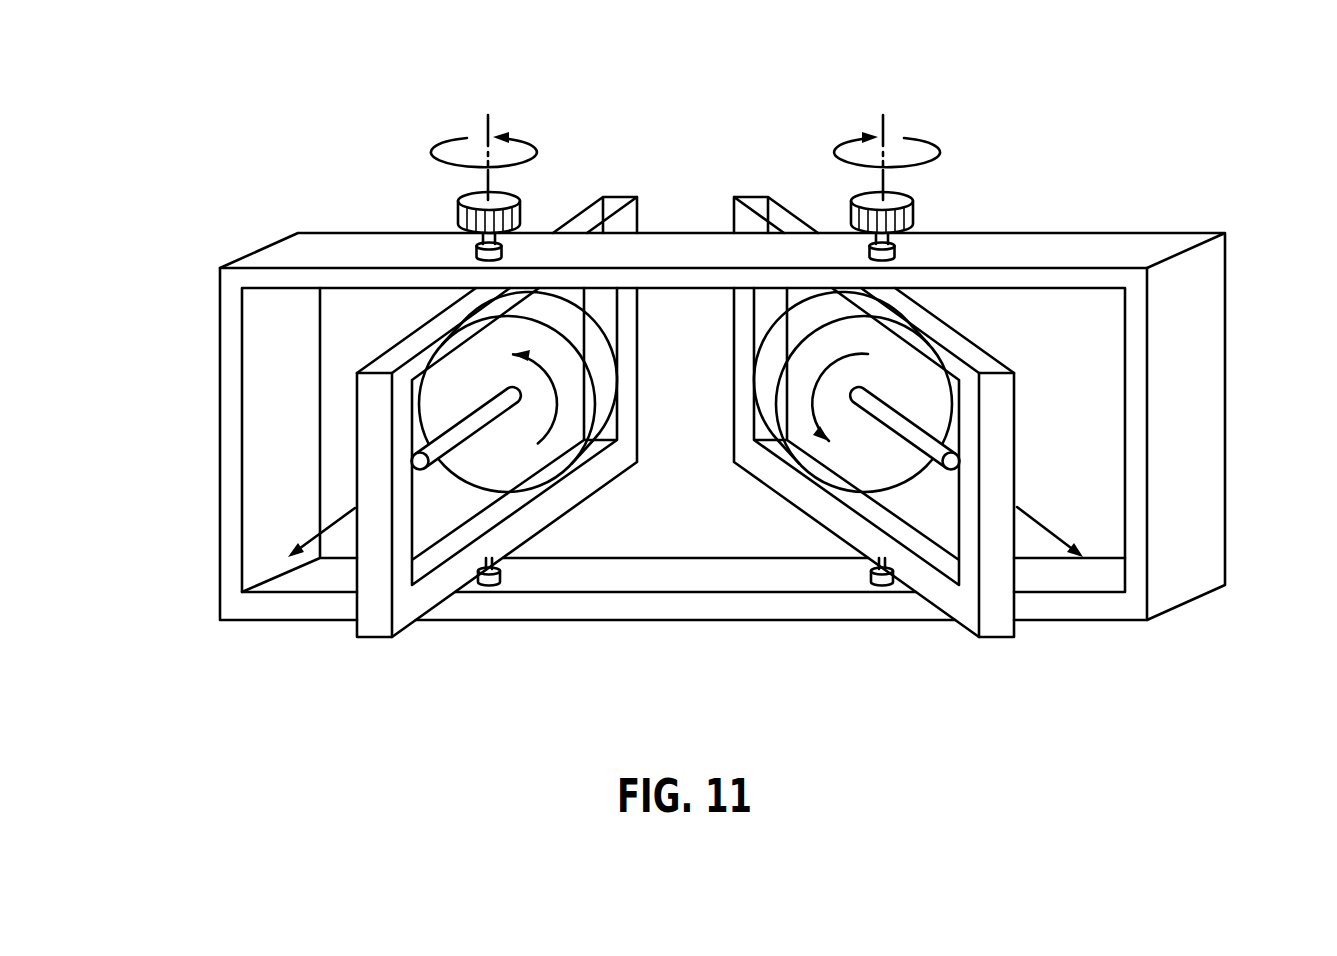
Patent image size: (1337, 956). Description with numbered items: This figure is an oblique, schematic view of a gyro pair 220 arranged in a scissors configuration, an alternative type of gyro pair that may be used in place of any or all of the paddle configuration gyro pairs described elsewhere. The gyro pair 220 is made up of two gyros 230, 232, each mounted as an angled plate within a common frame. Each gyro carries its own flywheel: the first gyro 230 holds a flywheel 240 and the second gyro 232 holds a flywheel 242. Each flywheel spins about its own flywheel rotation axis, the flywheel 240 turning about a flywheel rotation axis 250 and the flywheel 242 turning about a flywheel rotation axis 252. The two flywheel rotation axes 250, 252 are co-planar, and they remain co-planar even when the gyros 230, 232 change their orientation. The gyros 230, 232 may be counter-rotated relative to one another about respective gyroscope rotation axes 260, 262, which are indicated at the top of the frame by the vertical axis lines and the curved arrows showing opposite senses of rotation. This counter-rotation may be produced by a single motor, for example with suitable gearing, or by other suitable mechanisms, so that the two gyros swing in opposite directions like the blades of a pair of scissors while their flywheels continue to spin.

The gyro pair 220 is at (355, 126).
The gyro 230 is at (372, 652).
The gyro 232 is at (999, 652).
The flywheel 240 is at (453, 380).
The flywheel 242 is at (918, 380).
The flywheel rotation axis 250 is at (340, 520).
The flywheel rotation axis 252 is at (1037, 520).
The gyroscope rotation axis 260 is at (488, 148).
The gyroscope rotation axis 262 is at (883, 148).